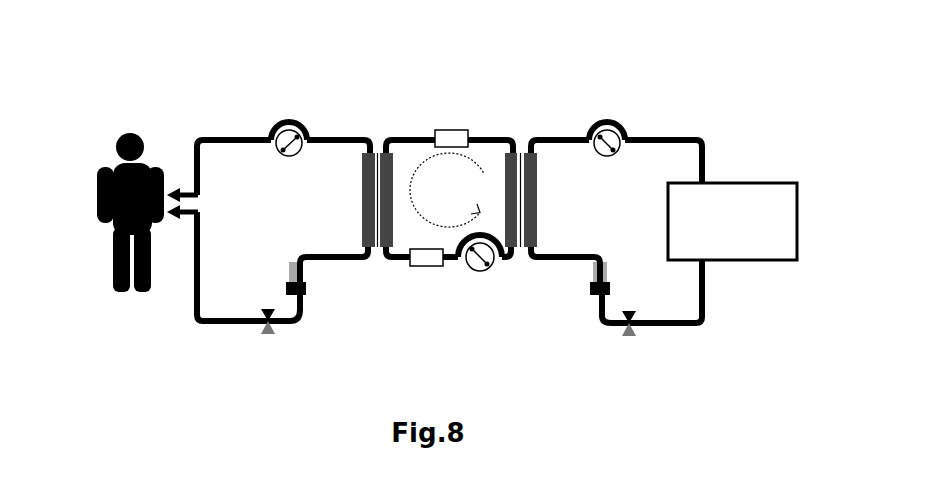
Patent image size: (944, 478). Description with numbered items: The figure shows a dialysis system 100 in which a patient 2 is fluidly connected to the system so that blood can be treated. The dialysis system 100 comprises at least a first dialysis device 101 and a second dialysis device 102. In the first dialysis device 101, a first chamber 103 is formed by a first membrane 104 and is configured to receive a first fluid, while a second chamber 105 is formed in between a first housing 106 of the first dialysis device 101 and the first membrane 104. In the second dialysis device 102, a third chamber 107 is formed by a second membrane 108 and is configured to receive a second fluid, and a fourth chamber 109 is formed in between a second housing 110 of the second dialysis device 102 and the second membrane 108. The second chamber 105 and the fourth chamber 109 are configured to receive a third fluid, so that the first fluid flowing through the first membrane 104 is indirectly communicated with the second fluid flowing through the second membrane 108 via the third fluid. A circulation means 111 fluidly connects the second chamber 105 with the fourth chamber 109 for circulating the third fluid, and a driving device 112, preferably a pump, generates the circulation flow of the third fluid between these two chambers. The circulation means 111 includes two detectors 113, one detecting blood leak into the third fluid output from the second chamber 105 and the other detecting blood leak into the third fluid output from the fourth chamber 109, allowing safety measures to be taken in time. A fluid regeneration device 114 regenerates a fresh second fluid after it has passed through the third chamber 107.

The dialysis system 100 is at (172, 102).
The patient 2 is at (115, 238).
The first dialysis device 101 is at (360, 180).
The second dialysis device 102 is at (537, 147).
The first chamber 103 is at (353, 267).
The first membrane 104 is at (382, 157).
The second chamber 105 is at (395, 258).
The first housing 106 is at (360, 213).
The third chamber 107 is at (532, 258).
The second membrane 108 is at (513, 150).
The fourth chamber 109 is at (507, 263).
The second housing 110 is at (537, 193).
The circulation means 111 is at (412, 133).
The driving device 112 is at (475, 272).
The detector 113 is at (443, 137).
The fluid regeneration device 114 is at (775, 224).